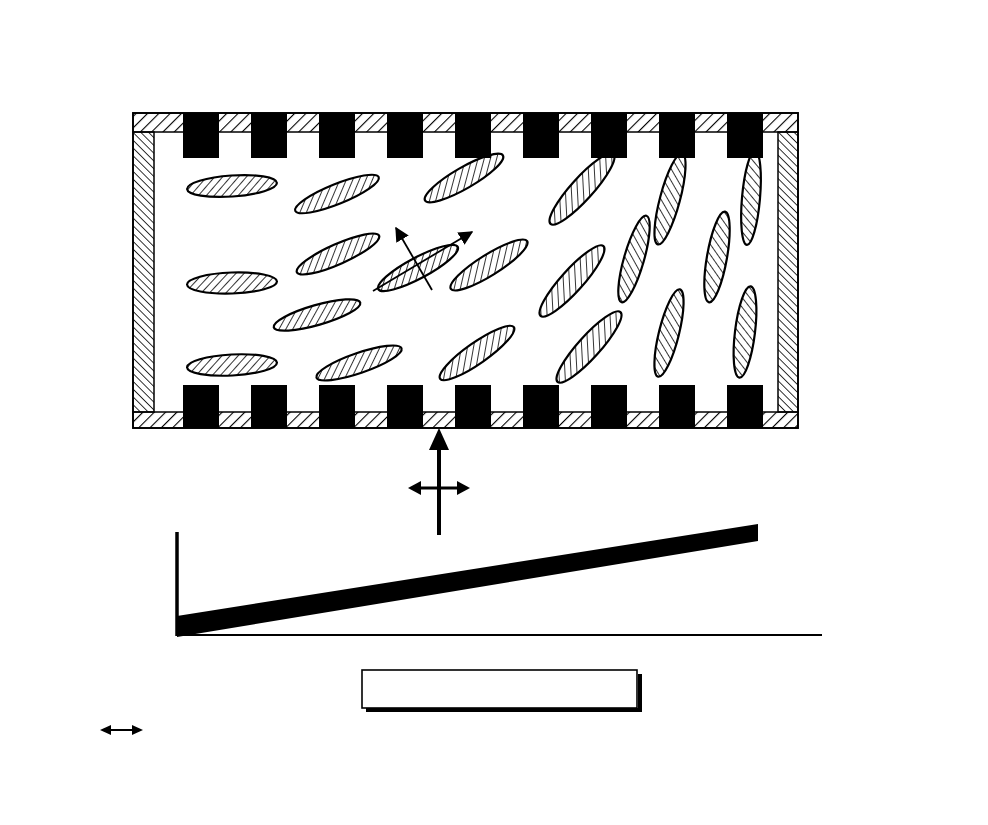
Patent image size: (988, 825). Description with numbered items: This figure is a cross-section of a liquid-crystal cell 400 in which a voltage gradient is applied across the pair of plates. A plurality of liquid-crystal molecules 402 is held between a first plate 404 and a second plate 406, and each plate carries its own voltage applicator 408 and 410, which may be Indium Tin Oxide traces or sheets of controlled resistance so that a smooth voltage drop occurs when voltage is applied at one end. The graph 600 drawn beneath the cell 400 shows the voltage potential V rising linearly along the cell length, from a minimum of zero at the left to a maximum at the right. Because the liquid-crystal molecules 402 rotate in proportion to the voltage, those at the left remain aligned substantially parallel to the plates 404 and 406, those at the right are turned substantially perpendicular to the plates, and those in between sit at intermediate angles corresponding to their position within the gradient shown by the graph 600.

The liquid-crystal cell 400 is at (106, 80).
The liquid-crystal molecules 402 is at (207, 283).
The first plate 404 is at (707, 114).
The second plate 406 is at (781, 419).
The voltage applicator 408 is at (333, 119).
The voltage applicator 410 is at (745, 419).
The graph 600 is at (154, 607).